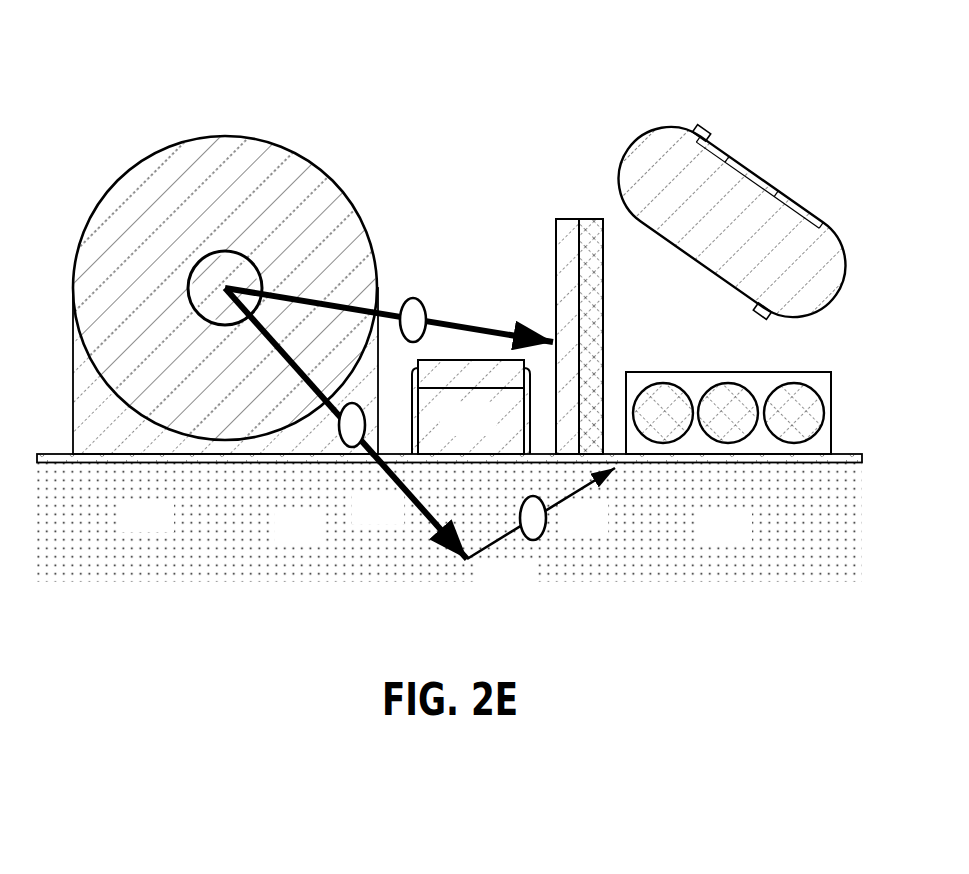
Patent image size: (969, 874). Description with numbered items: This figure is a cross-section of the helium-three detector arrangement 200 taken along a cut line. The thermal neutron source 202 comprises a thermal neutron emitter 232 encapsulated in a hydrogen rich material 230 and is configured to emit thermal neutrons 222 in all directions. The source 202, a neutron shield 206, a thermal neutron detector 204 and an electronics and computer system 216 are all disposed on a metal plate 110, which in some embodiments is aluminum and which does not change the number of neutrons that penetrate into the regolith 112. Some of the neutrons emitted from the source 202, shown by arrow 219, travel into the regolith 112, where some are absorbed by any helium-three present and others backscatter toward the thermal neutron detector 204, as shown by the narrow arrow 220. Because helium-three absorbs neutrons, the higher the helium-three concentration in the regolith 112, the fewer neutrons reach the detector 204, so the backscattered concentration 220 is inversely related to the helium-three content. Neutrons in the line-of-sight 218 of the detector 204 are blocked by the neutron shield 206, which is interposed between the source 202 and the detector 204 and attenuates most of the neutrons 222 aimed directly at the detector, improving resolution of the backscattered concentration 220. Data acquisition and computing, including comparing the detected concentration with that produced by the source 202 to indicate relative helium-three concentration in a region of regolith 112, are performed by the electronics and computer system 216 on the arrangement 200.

The He-3 detector arrangement 200 is at (490, 49).
The thermal neutron source 202 is at (233, 136).
The hydrogen rich material 230 is at (187, 180).
The thermal neutron emitter 232 is at (225, 252).
The neutron shield 206 is at (593, 219).
The electronics and computer system 216 is at (490, 432).
The thermal neutron detector 204 is at (672, 372).
The line-of-sight thermal neutrons 218 is at (389, 315).
The emitted neutrons toward regolith 219 is at (346, 423).
The backscattered neutron concentration 220 is at (541, 527).
The thermal neutrons 222 is at (340, 431).
The metal plate 110 is at (235, 463).
The regolith 112 is at (745, 542).